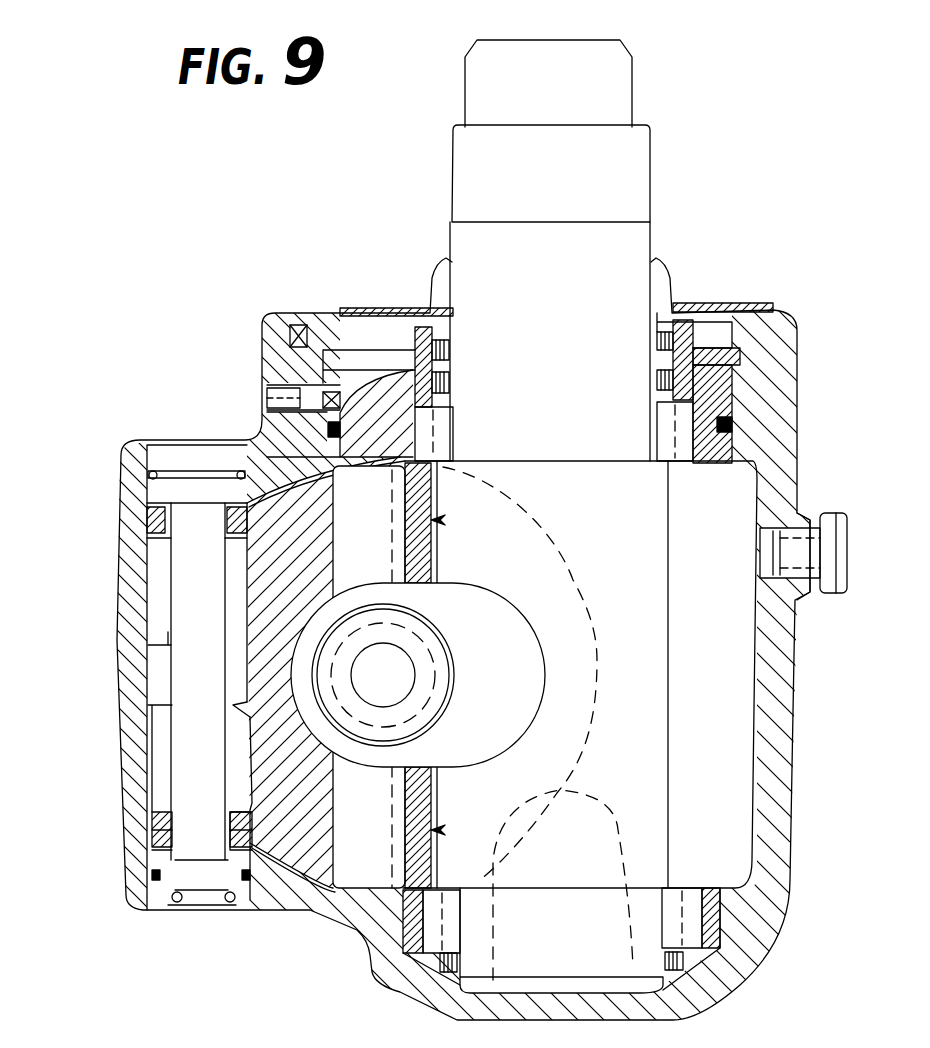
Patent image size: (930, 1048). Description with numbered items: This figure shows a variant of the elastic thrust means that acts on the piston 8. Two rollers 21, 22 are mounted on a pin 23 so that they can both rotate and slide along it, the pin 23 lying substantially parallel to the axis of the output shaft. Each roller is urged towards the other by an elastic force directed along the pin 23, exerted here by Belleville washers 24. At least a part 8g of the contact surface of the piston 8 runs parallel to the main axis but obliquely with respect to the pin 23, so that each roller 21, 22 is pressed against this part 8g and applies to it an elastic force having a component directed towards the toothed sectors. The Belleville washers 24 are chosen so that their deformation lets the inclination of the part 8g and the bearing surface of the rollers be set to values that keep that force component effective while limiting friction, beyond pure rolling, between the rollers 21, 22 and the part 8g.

The piston 8 is at (300, 843).
The part of the contact surface 8g is at (243, 630).
The roller 21 is at (163, 747).
The roller 22 is at (163, 560).
The pin 23 is at (198, 835).
The Belleville washers 24 is at (120, 493).